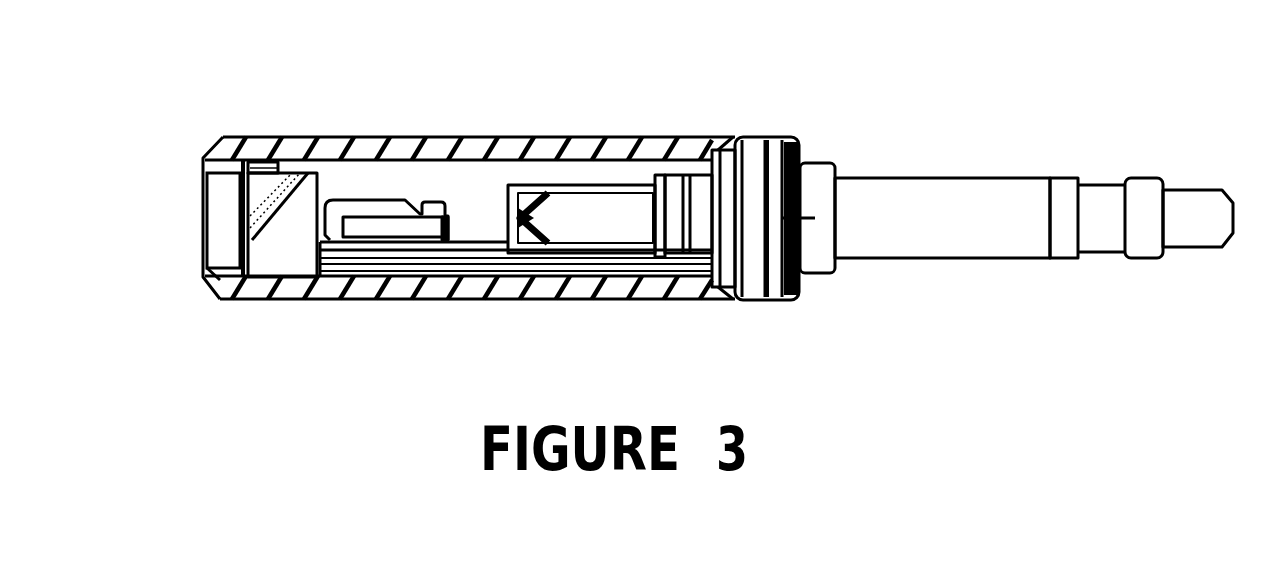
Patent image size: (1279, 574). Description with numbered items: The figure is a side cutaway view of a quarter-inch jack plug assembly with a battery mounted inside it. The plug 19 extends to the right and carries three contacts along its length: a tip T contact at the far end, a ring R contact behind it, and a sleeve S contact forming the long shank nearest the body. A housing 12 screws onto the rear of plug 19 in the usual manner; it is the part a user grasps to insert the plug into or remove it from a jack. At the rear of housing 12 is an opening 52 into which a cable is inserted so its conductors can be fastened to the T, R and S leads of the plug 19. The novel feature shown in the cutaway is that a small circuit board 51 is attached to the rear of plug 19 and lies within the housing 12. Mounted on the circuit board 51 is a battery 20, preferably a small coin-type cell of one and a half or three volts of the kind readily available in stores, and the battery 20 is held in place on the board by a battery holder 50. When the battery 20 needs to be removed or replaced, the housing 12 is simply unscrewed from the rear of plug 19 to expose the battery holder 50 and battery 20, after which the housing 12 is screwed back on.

The housing 12 is at (285, 133).
The plug 19 is at (999, 209).
The battery 20 is at (455, 222).
The battery holder 50 is at (375, 200).
The circuit board 51 is at (435, 248).
The opening 52 is at (218, 232).
The sleeve contact S is at (897, 172).
The ring contact R is at (1097, 178).
The tip contact T is at (1200, 187).